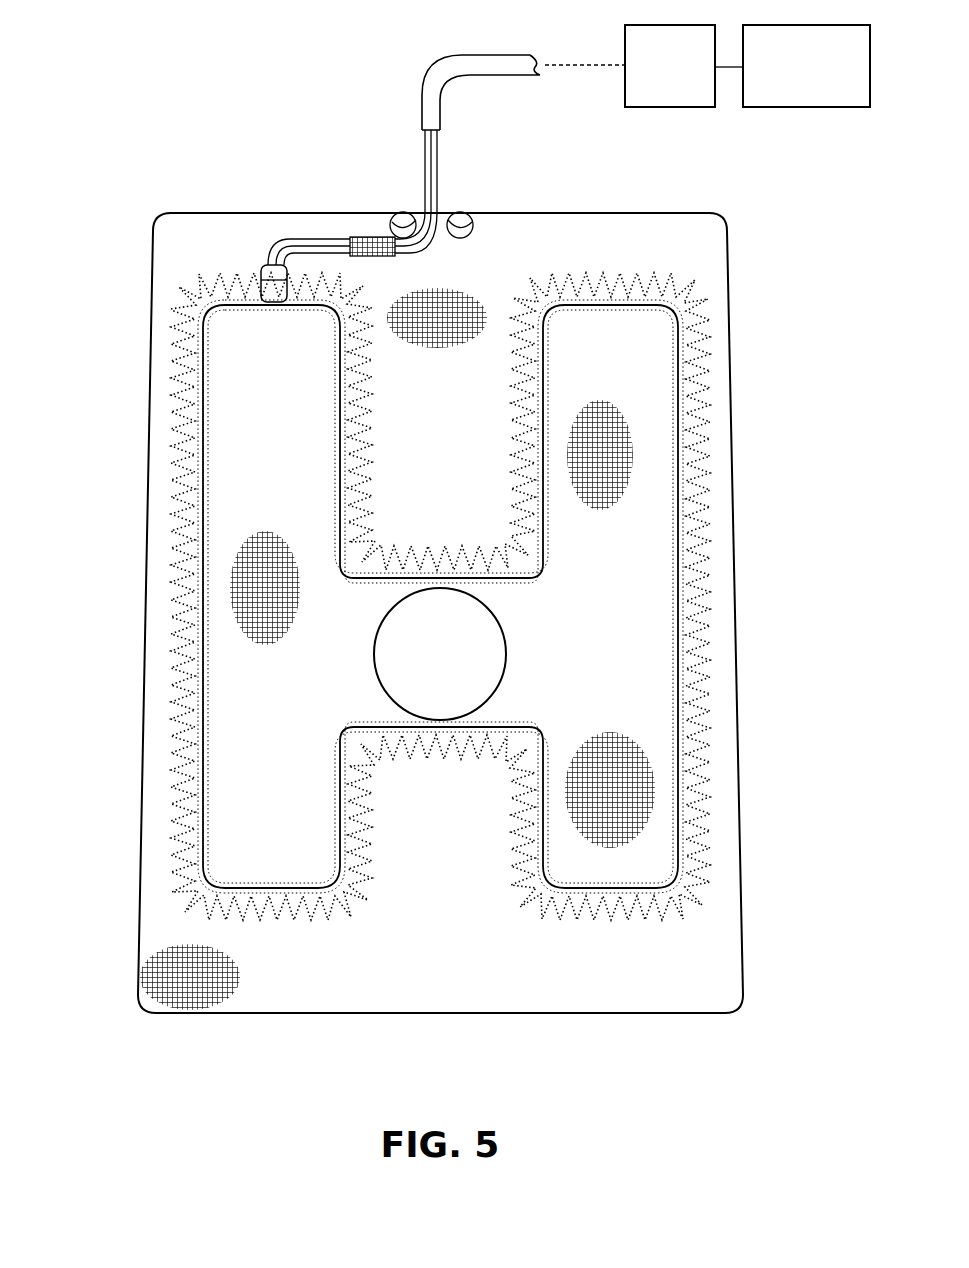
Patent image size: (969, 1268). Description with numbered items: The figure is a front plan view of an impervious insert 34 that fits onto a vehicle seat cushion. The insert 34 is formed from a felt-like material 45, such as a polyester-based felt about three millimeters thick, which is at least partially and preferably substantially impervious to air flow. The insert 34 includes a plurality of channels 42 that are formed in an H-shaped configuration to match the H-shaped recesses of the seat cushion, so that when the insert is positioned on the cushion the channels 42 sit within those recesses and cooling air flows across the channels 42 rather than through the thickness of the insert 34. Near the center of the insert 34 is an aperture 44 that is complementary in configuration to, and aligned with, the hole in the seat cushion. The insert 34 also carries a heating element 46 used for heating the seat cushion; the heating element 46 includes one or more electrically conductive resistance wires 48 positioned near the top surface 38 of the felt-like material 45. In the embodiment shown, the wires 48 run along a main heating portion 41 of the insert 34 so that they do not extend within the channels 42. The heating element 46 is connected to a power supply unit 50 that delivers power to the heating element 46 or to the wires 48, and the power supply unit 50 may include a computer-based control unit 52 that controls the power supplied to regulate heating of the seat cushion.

The insert 34 is at (518, 152).
The top surface 38 is at (318, 977).
The main heating portion 41 is at (705, 250).
The channels 42 is at (233, 608).
The aperture 44 is at (386, 664).
The felt-like material 45 is at (188, 257).
The heating element 46 is at (610, 277).
The electrically conductive resistance wires 48 is at (250, 277).
The power supply unit 50 is at (653, 107).
The computer-based control unit 52 is at (795, 107).